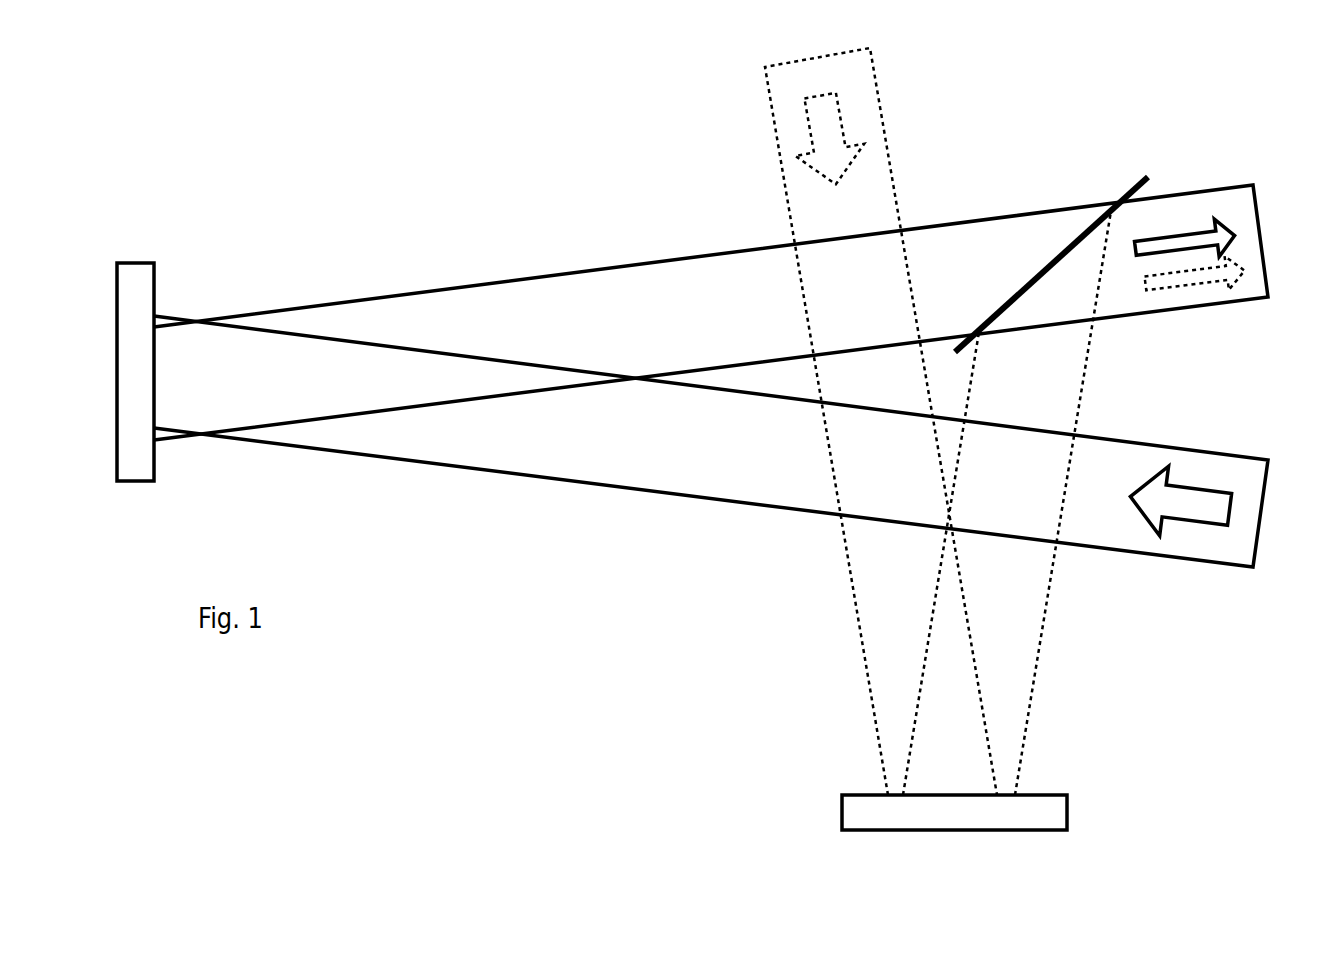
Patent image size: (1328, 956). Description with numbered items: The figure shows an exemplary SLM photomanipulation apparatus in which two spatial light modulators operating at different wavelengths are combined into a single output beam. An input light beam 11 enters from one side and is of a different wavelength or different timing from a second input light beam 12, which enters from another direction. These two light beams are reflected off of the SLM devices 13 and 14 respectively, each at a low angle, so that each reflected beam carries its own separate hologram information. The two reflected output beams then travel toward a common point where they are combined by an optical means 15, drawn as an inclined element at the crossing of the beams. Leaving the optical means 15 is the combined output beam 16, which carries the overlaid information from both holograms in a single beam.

The input light beam 11 is at (711, 480).
The input light beam 12 is at (838, 421).
The SLM device 13 is at (923, 812).
The SLM device 14 is at (135, 343).
The optical means 15 is at (1025, 460).
The combined output beam 16 is at (736, 312).